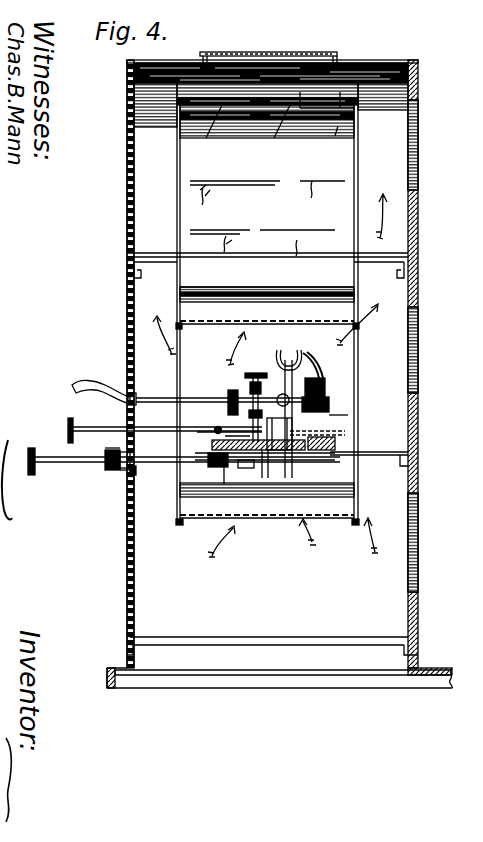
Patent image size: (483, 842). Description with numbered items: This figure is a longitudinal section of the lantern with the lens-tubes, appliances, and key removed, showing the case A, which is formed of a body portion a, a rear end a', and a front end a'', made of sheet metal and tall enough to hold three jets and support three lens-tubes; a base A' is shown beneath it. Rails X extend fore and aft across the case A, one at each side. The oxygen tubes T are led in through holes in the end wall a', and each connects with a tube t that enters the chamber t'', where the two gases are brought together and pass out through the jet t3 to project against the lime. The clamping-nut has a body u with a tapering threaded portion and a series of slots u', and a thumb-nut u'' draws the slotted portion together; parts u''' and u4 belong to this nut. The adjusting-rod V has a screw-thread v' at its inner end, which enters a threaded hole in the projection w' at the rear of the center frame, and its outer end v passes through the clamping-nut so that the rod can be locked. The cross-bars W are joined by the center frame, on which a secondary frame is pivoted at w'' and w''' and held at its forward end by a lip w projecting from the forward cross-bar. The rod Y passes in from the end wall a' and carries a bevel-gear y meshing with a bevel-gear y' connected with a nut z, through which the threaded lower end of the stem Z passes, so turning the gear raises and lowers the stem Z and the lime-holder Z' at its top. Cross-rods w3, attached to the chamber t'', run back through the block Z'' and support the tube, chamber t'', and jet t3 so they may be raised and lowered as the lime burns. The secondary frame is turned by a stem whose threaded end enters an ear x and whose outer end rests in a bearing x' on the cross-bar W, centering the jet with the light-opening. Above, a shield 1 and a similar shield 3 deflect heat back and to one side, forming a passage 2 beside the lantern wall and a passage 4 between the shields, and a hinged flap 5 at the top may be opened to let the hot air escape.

The case A is at (272, 364).
The base A' is at (279, 690).
The body portion a is at (272, 89).
The rear end a' is at (119, 364).
The front end a'' is at (284, 266).
The hinged door or flap 5 is at (314, 52).
The shield 1 is at (267, 312).
The passage 2 is at (232, 125).
The shield 3 is at (267, 392).
The passage 4 is at (302, 118).
The rails X is at (267, 363).
The tubes T is at (101, 384).
The tube t is at (215, 391).
The chamber t'' is at (326, 398).
The jet t3 is at (322, 377).
The rod Y is at (165, 426).
The bevel-gear y is at (262, 465).
The bevel-gear y' is at (338, 414).
The damper rod v is at (178, 461).
The screw-thread v' is at (243, 470).
The adjusting-rod V is at (112, 472).
The body u is at (119, 454).
The slots u' is at (105, 475).
The thumb-nut u'' is at (102, 448).
The sleeve guide u''' is at (216, 467).
The pin u4 is at (138, 470).
The lip w is at (327, 444).
The projection w' is at (265, 460).
The pivot w'' is at (369, 447).
The bracket post w''' is at (254, 476).
The cross-rods w3 is at (128, 472).
The cross-bars W is at (317, 430).
The ear x is at (208, 424).
The bearing x' is at (229, 422).
The nut z is at (284, 431).
The stem Z is at (261, 392).
The lime-holder Z' is at (288, 352).
The block Z'' is at (260, 406).